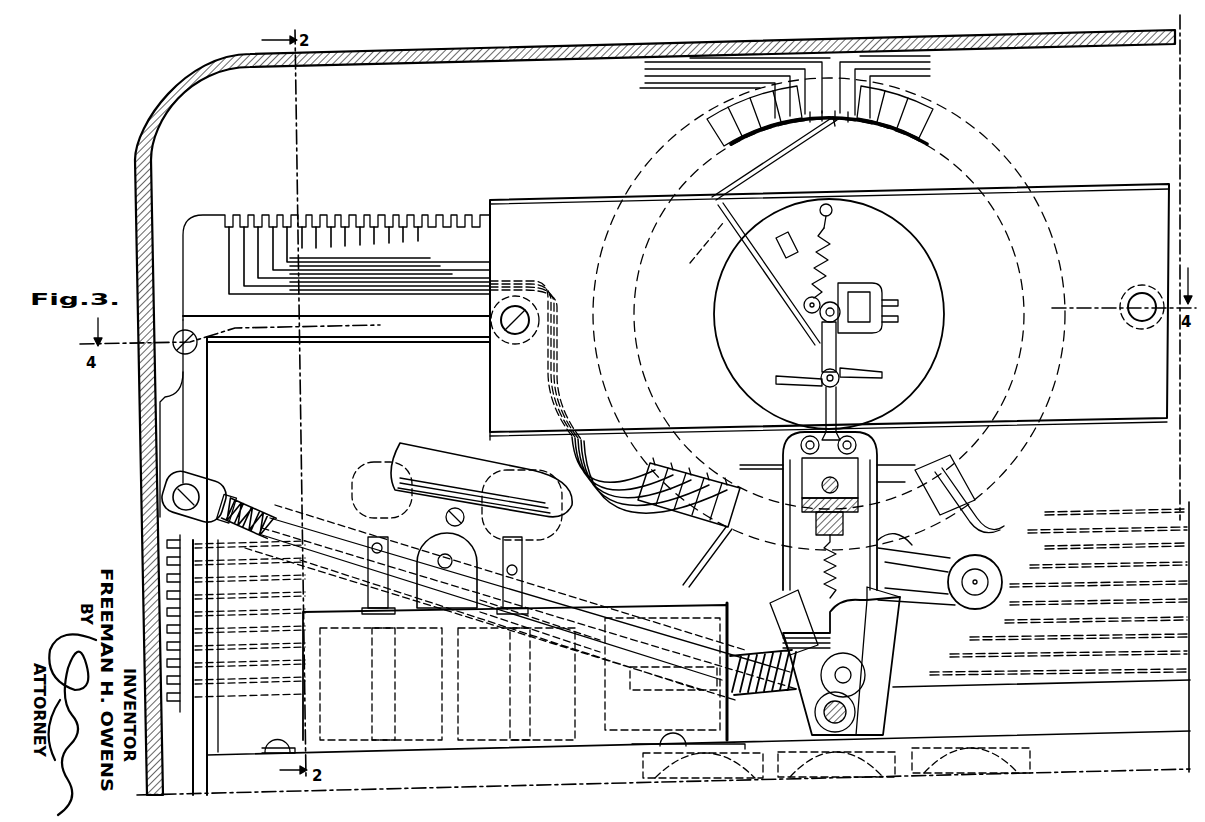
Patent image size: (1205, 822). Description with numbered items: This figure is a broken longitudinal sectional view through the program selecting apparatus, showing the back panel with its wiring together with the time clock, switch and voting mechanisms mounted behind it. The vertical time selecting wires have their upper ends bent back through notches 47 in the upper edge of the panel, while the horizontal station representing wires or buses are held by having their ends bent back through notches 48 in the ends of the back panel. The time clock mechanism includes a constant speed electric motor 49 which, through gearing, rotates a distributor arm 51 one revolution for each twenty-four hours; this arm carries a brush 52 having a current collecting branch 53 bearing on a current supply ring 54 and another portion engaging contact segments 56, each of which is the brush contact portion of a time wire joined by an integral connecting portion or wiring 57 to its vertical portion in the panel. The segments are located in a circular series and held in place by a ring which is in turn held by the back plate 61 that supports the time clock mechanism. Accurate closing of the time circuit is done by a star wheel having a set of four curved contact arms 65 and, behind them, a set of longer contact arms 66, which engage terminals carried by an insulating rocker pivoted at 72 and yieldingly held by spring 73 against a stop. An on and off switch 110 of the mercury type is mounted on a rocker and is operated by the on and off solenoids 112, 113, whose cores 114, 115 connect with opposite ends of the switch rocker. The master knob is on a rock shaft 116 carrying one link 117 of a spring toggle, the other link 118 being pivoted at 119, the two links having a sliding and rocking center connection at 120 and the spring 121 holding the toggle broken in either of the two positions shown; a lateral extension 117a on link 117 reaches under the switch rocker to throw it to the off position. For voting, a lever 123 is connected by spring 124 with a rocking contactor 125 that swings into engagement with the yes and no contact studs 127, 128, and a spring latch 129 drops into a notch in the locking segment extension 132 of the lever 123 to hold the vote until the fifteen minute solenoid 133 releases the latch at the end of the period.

The notches 47 is at (237, 216).
The notches 48 is at (165, 545).
The constant speed electric motor 49 is at (925, 268).
The distributor arm 51 is at (753, 274).
The brush 52 is at (768, 165).
The current collecting branch 53 is at (828, 130).
The current supply ring 54 is at (840, 128).
The contact segments 56 is at (790, 133).
The wiring 57 is at (636, 518).
The back plate 61 is at (1080, 202).
The contact arms 65 is at (822, 350).
The contact arms 66 is at (782, 385).
The pivot 72 is at (840, 305).
The spring 73 is at (825, 248).
The on and off switch 110 is at (420, 445).
The on solenoid 112 is at (516, 684).
The off solenoid 113 is at (381, 684).
The core 114 is at (365, 604).
The core 115 is at (523, 590).
The rock shaft 116 is at (858, 712).
The link 117 is at (600, 600).
The lateral extension 117a is at (540, 626).
The link 118 is at (368, 575).
The pivot 119 is at (200, 495).
The sliding and rocking center connection 120 is at (440, 625).
The spring 121 is at (248, 507).
The lever 123 is at (771, 656).
The spring 124 is at (824, 560).
The rocking contactor 125 is at (802, 480).
The contact stud 127 is at (858, 445).
The contact stud 128 is at (800, 446).
The spring latch 129 is at (925, 606).
The locking segment extension 132 is at (785, 592).
The fifteen minute solenoid 133 is at (775, 600).